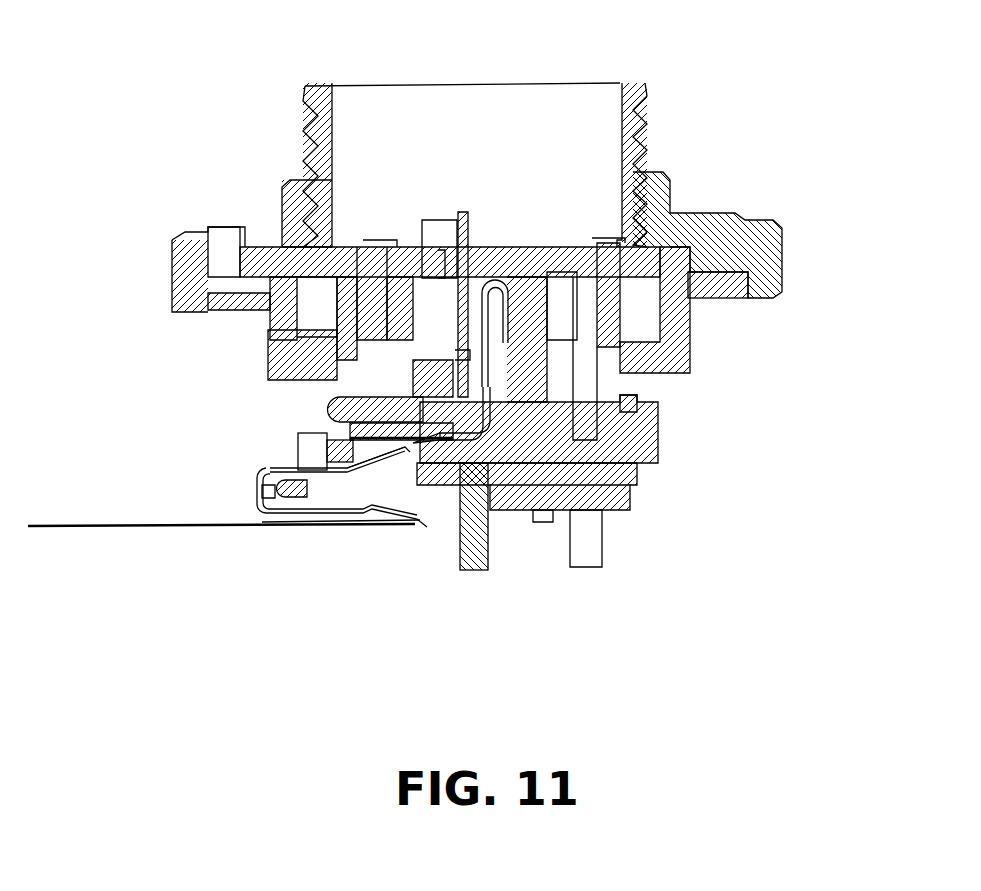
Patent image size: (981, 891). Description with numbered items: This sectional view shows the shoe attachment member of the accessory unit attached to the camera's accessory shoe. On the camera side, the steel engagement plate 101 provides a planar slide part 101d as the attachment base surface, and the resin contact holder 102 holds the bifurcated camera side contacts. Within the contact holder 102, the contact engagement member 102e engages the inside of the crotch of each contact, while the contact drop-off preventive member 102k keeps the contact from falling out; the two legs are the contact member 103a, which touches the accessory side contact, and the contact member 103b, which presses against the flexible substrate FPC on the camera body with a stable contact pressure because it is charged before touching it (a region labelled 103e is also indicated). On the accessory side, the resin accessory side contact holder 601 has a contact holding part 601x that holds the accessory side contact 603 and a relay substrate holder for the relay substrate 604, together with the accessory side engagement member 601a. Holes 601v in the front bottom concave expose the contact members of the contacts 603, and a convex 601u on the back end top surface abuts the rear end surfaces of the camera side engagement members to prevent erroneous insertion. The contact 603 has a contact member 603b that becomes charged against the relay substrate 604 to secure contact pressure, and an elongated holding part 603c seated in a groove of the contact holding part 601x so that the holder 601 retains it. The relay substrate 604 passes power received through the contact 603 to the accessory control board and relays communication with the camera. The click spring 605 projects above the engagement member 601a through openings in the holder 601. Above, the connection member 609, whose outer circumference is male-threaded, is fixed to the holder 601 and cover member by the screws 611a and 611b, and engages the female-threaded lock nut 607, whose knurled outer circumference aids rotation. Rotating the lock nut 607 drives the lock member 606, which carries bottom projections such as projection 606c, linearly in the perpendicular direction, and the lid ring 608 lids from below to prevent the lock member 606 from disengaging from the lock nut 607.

The accessory side contact holder 601 is at (658, 456).
The accessory side engagement member 601a is at (373, 463).
The convex 601u is at (654, 404).
The holes 601v is at (413, 443).
The contact holding part 601x is at (453, 437).
The accessory side contact 603 is at (450, 324).
The contact member 603b is at (467, 357).
The holding part 603c is at (577, 340).
The relay substrate 604 is at (463, 212).
The click spring 605 is at (527, 377).
The lock member 606 is at (677, 340).
The projection 606c is at (243, 338).
The lock nut 607 is at (762, 228).
The lid ring 608 is at (728, 294).
The connection member 609 is at (630, 82).
The screw 611a is at (567, 243).
The screw 611b is at (389, 240).
The engagement plate 101 is at (640, 476).
The slide part 101d is at (637, 516).
The contact holder 102 is at (632, 573).
The contact engagement member 102e is at (293, 490).
The contact drop-off preventive member 102k is at (257, 517).
The contact member 103a is at (378, 470).
The contact member 103b is at (360, 392).
The engaging portion of connector 103e is at (288, 487).
The flexible substrate FPC is at (117, 527).